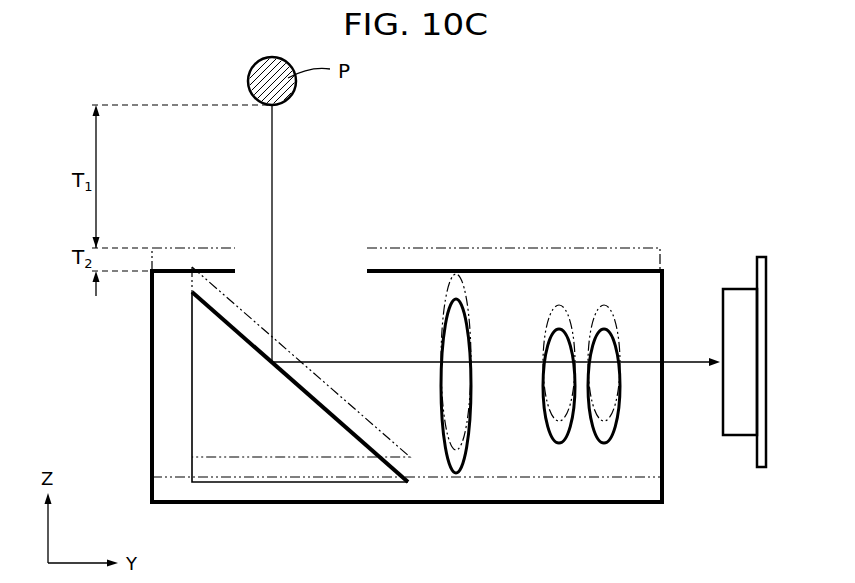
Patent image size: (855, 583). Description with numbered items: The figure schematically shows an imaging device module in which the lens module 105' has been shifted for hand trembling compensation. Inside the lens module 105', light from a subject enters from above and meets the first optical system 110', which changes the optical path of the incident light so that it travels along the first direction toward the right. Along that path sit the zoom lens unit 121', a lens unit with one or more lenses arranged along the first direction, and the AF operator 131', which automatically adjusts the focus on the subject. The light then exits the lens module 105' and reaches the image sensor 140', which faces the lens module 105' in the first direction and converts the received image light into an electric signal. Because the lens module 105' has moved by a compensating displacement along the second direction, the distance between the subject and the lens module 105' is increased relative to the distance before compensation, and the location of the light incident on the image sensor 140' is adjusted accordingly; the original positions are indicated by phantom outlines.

The lens module 105' is at (416, 415).
The first optical system 110' is at (301, 412).
The zoom lens unit 121' is at (458, 415).
The AF operator 131' is at (581, 431).
The image sensor 140' is at (754, 394).